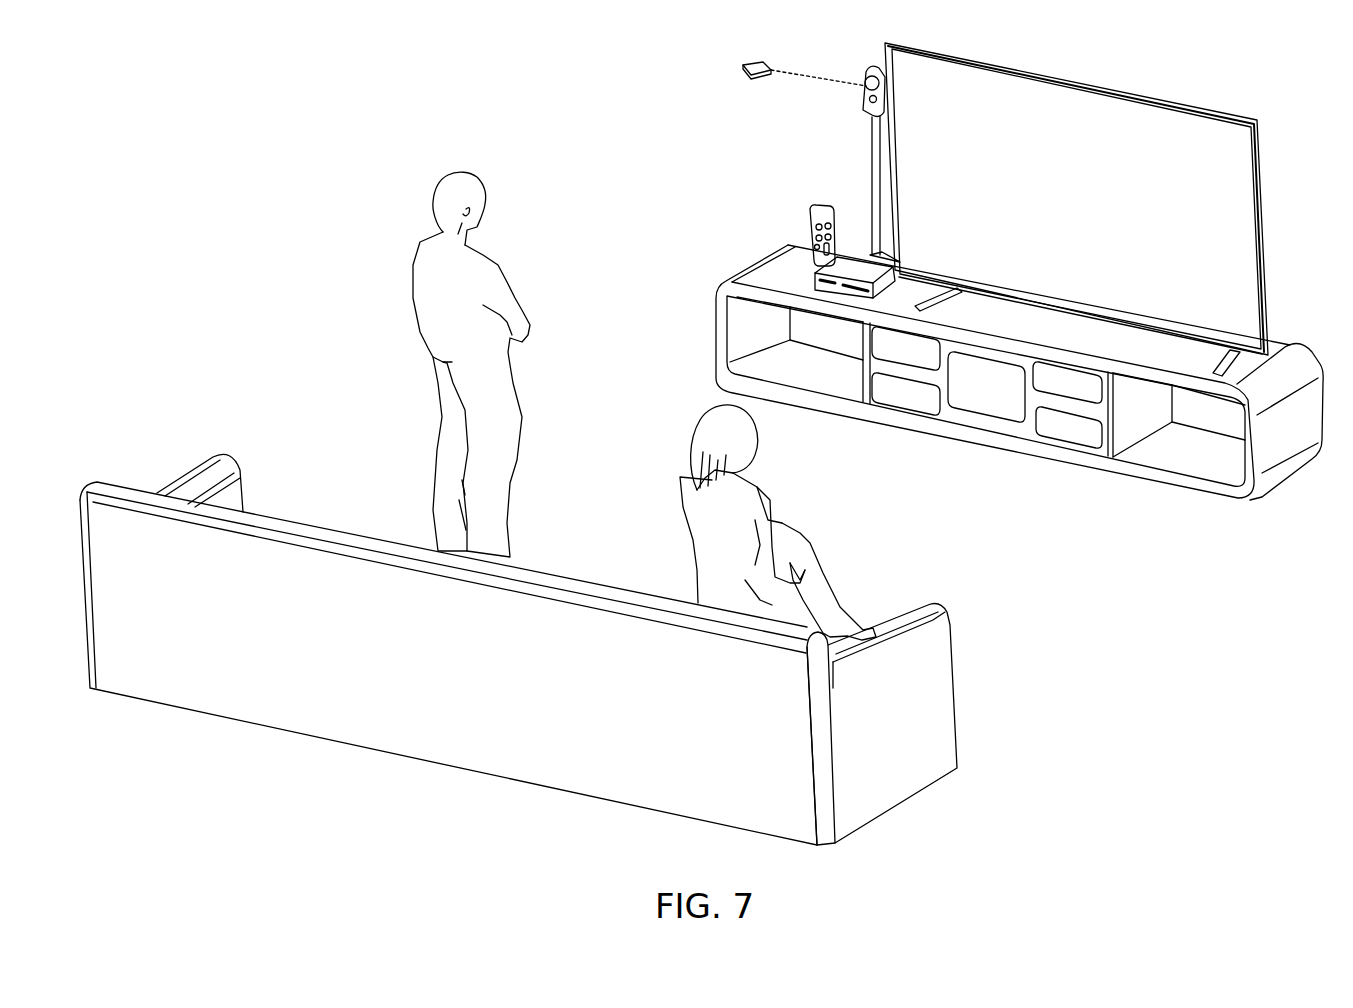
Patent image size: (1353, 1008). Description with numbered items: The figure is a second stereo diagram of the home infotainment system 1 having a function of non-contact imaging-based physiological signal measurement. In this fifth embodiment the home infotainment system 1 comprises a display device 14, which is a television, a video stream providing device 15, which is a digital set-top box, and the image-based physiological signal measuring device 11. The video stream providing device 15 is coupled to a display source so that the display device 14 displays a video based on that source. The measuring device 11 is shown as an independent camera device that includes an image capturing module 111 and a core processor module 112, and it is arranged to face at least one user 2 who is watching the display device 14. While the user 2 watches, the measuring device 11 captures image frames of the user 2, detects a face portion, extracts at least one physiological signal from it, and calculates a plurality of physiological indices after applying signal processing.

The home infotainment system 1 is at (548, 125).
The user 2 is at (522, 356).
The image-based physiological signal (IBPS) measuring device 11 is at (870, 63).
The image capturing module 111 is at (862, 93).
The core processor module 112 is at (743, 72).
The display device 14 is at (1242, 102).
The video stream providing device 15 is at (856, 240).